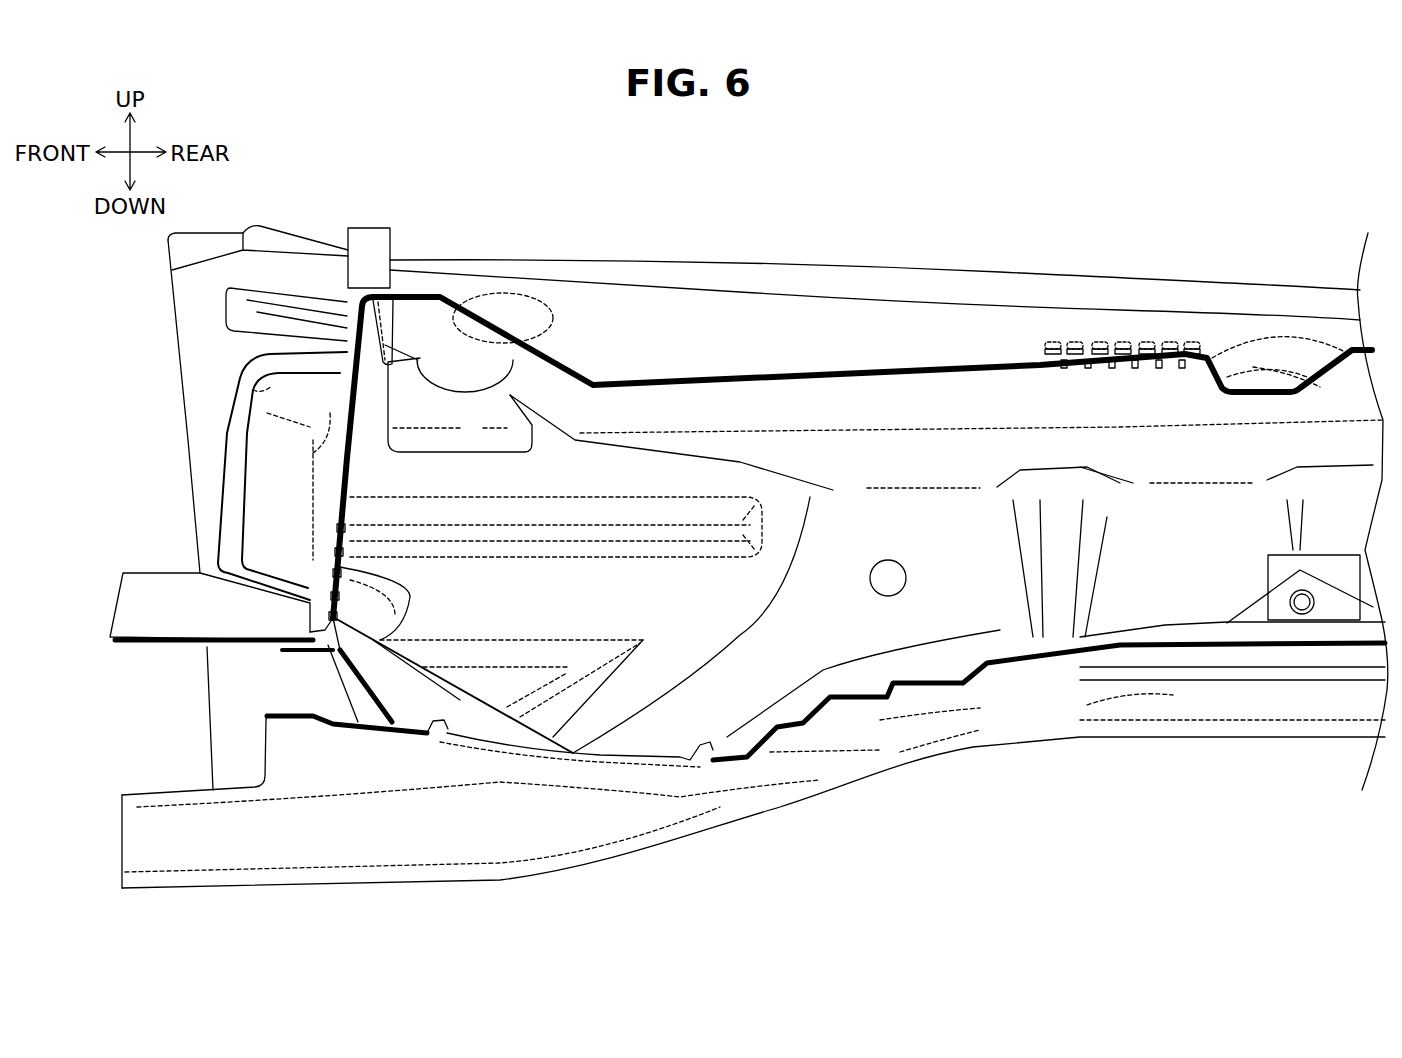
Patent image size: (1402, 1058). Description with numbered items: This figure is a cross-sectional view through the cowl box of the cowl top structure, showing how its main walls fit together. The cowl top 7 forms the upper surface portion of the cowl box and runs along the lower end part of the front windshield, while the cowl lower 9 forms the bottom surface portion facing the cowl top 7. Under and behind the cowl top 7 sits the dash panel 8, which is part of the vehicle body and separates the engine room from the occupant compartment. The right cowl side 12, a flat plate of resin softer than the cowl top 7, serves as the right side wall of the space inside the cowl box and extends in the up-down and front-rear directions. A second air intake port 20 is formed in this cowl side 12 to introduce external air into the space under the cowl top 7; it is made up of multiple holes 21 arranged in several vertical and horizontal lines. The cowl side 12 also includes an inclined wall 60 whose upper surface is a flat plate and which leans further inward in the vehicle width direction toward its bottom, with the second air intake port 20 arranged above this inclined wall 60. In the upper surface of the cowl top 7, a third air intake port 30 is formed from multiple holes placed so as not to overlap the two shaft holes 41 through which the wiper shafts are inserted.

The cowl top 7 is at (598, 357).
The dash panel 8 is at (933, 540).
The cowl lower 9 is at (975, 742).
The cowl side 12 is at (322, 395).
The second air intake port 20 is at (128, 442).
The holes 21 is at (336, 518).
The third air intake port 30 is at (1123, 347).
The shaft holes 41 is at (522, 333).
The inclined wall 60 is at (447, 697).